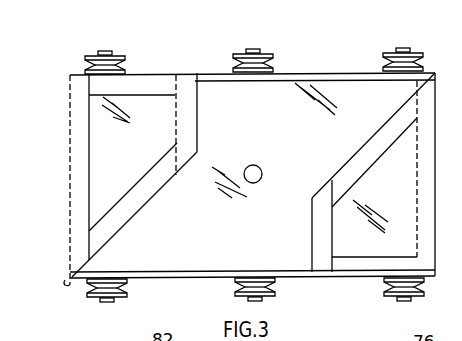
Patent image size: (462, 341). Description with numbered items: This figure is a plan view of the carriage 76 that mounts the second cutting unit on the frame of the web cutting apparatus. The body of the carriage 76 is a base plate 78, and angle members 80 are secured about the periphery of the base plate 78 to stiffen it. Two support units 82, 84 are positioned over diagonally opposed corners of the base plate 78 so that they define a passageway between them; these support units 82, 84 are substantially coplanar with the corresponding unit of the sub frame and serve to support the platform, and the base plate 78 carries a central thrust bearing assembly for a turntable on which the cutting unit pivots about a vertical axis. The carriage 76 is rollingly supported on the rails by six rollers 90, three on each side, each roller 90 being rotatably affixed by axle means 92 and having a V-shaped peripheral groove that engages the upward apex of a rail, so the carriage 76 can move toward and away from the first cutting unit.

The carriage 76 is at (153, 283).
The base plate 78 is at (187, 264).
The angle members 80 is at (347, 81).
The support unit 82 is at (150, 202).
The support unit 84 is at (340, 164).
The rollers 90 is at (275, 288).
The axle means 92 is at (392, 301).